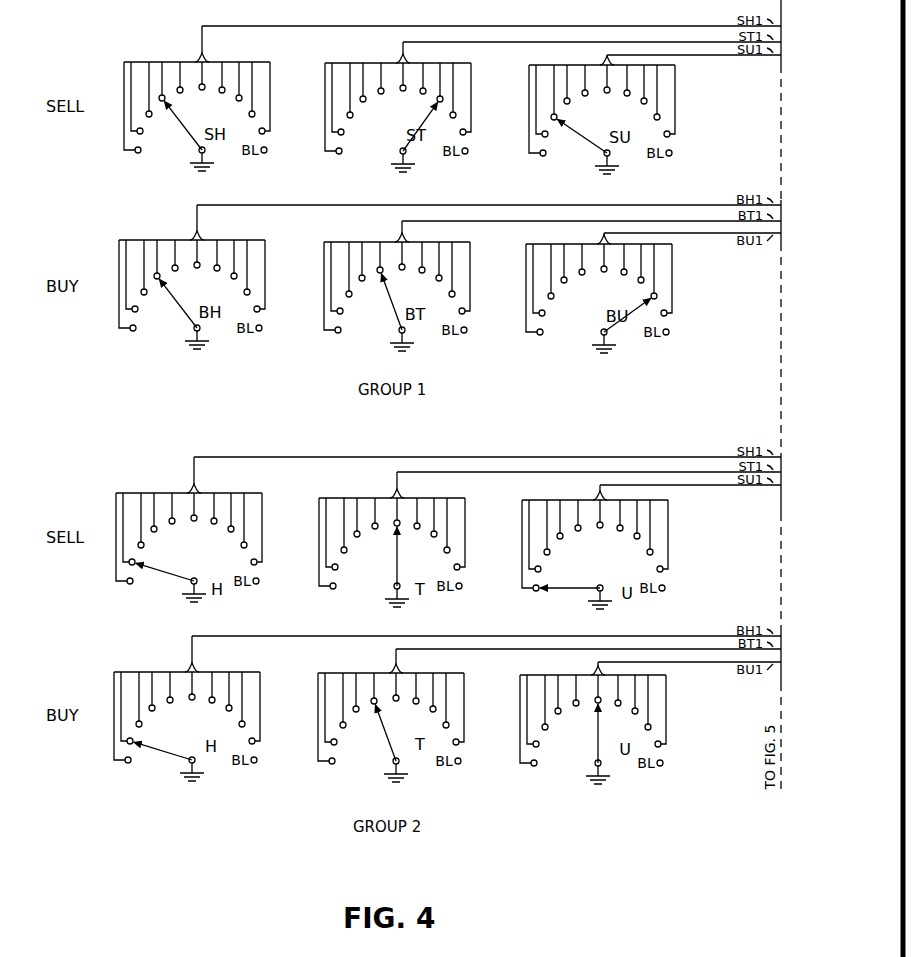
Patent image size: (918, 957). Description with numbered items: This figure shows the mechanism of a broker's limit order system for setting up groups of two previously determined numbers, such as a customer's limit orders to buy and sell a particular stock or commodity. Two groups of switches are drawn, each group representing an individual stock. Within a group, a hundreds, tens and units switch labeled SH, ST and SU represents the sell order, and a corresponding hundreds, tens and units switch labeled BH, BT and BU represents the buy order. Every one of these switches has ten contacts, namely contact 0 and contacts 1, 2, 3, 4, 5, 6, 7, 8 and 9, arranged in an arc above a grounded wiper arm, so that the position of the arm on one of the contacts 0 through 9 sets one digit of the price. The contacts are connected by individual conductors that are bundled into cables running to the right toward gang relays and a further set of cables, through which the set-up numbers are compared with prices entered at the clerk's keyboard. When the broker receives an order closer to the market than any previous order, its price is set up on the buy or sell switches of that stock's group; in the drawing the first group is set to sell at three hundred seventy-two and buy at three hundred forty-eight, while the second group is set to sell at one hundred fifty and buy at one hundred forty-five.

The switch contact 0 is at (336, 416).
The switch contact 1 is at (341, 407).
The switch contact 2 is at (351, 401).
The switch contact 3 is at (354, 388).
The switch contact 4 is at (380, 391).
The switch contact 5 is at (397, 389).
The switch contact 6 is at (417, 391).
The switch contact 7 is at (432, 395).
The switch contact 8 is at (444, 400).
The switch contact 9 is at (456, 407).